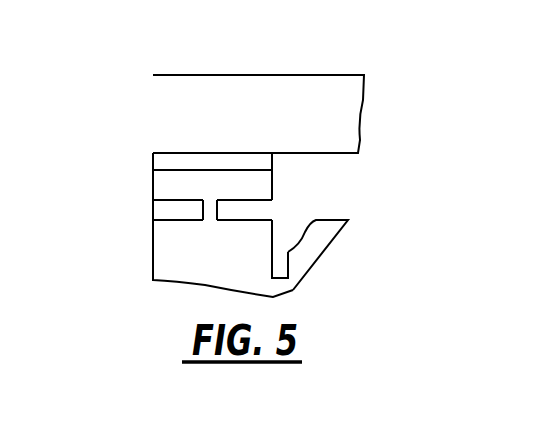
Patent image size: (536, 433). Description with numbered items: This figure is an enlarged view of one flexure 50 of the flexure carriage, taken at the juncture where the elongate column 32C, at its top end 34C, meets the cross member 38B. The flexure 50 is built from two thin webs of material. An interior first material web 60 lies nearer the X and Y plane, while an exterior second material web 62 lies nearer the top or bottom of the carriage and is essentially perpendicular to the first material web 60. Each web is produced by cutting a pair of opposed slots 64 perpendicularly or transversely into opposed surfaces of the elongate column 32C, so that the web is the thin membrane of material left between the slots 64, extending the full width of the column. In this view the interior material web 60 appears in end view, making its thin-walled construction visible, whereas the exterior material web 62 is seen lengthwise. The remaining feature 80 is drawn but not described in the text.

The cross member 38B is at (300, 30).
The top end 34C is at (140, 163).
The exterior second material web 62 is at (263, 160).
The slots 64 is at (171, 211).
The flexure 50 is at (140, 219).
The interior first material web 60 is at (212, 216).
The elongate column 32C is at (175, 270).
The recess 80 is at (313, 254).